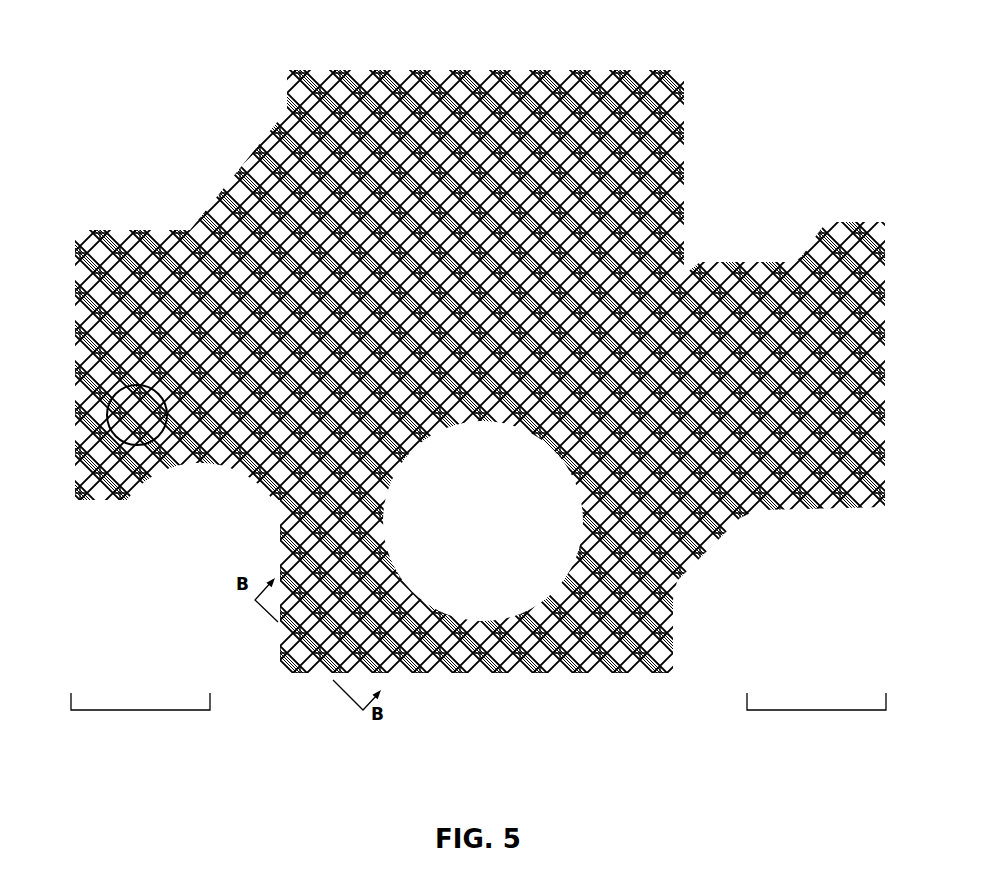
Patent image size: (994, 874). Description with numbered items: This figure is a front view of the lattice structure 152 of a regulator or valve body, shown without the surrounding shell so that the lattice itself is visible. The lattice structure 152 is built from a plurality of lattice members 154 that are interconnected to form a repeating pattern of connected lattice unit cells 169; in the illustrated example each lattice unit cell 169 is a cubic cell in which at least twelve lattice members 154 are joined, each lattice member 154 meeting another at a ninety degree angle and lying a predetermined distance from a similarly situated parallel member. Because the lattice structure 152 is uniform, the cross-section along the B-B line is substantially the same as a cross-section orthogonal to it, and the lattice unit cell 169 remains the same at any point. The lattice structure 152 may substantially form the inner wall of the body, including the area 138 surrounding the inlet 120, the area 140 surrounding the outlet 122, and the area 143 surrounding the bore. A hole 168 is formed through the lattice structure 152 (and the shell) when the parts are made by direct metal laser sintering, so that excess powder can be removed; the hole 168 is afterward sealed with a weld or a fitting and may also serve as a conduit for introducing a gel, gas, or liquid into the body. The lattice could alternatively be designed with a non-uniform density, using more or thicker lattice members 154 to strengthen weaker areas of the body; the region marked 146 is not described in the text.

The inlet 120 is at (78, 332).
The outlet 122 is at (874, 386).
The area surrounding the inlet 138 is at (140, 717).
The area surrounding the outlet 140 is at (816, 717).
The area surrounding the bore 143 is at (398, 162).
The transition region 146 is at (703, 277).
The lattice structure 152 is at (233, 188).
The lattice members 154 is at (656, 183).
The hole 168 is at (511, 585).
The lattice unit cell 169 is at (128, 444).